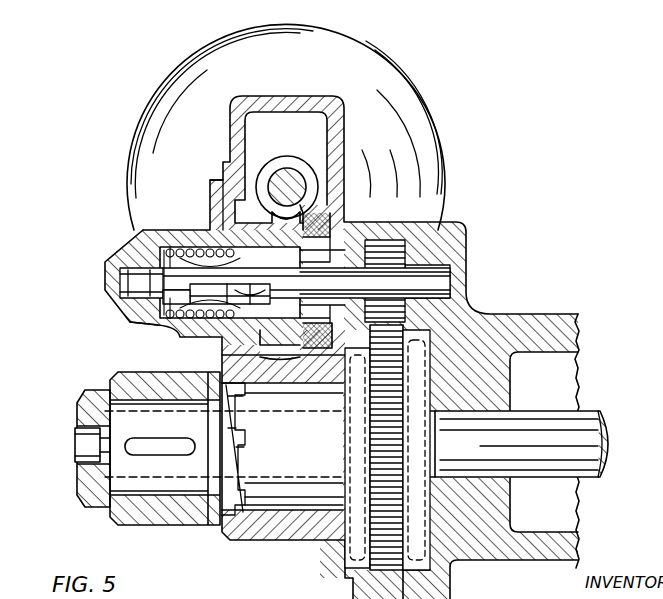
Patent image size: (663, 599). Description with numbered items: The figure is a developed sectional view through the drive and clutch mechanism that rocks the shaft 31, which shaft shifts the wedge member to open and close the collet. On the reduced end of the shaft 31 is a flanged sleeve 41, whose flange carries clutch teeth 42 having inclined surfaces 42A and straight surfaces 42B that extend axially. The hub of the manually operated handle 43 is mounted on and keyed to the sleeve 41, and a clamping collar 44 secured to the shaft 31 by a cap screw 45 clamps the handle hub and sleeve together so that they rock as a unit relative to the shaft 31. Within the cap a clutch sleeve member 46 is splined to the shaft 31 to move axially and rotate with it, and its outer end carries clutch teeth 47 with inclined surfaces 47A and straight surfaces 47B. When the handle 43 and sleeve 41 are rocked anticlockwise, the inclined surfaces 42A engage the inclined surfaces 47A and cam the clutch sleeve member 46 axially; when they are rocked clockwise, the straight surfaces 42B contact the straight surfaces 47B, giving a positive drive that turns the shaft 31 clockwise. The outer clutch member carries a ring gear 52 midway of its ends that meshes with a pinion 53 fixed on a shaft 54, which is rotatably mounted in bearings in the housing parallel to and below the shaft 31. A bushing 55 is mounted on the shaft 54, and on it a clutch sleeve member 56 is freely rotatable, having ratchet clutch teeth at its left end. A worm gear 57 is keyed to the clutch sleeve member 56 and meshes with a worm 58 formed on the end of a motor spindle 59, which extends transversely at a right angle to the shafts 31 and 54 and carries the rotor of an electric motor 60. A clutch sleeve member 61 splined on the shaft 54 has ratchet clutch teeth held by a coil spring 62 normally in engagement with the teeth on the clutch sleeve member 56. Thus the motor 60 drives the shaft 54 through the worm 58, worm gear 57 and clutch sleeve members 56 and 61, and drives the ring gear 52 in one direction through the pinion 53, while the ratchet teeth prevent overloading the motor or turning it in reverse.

The shaft 31 is at (583, 418).
The flanged sleeve 41 is at (160, 456).
The clutch teeth 42 is at (231, 431).
The inclined surfaces 42A is at (222, 478).
The straight surfaces 42B is at (218, 422).
The manually operated handle 43 is at (152, 372).
The clamping collar 44 is at (93, 403).
The cap screw 45 is at (82, 447).
The clutch sleeve member 46 is at (292, 474).
The clutch teeth 47 is at (240, 458).
The inclined surfaces 47A is at (236, 404).
The straight surfaces 47B is at (244, 450).
The ring gear 52 is at (403, 422).
The pinion 53 is at (398, 247).
The shaft 54 is at (440, 278).
The bushing 55 is at (262, 270).
The clutch sleeve member 56 is at (290, 290).
The worm gear 57 is at (272, 219).
The worm 58 is at (275, 168).
The motor spindle 59 is at (288, 172).
The electric motor 60 is at (386, 76).
The clutch sleeve member 61 is at (210, 214).
The coil spring 62 is at (163, 328).